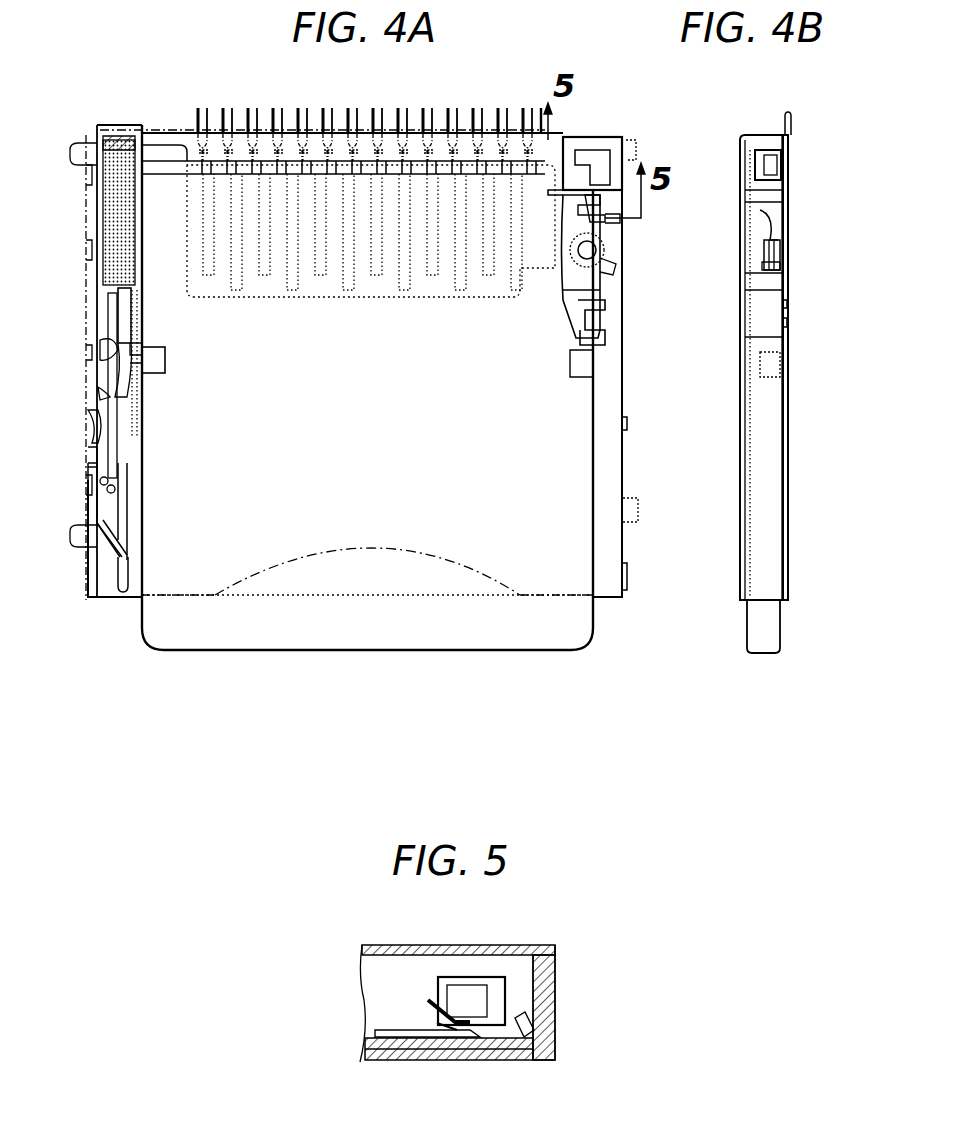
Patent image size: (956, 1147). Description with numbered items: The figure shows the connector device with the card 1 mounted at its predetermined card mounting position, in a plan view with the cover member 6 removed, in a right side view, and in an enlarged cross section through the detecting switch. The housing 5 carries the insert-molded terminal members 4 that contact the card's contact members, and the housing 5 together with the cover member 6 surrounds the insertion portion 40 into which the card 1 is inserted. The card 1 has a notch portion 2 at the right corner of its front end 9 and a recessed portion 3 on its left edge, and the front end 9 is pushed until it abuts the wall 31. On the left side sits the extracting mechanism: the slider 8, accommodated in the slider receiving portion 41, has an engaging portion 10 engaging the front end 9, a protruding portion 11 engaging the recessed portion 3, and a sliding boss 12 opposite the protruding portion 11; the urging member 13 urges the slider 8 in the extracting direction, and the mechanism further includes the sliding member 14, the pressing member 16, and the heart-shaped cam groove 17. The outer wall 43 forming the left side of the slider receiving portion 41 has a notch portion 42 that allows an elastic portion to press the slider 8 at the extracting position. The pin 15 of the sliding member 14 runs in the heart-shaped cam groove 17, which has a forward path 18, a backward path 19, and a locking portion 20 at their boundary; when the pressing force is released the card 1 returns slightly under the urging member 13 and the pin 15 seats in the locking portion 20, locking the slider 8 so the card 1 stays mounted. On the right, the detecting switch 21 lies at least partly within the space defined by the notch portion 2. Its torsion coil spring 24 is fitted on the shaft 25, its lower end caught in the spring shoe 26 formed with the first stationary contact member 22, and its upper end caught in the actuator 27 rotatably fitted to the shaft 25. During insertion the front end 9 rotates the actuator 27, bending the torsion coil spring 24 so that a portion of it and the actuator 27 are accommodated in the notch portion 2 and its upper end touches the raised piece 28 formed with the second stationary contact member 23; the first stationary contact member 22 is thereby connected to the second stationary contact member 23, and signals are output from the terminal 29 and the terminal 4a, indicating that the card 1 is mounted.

In FIG. 4A, the card 1 is at (360, 650).
In FIG. 4B, the card 1 is at (763, 645).
In FIG. 4A, the notch portion 2 is at (563, 290).
In FIG. 4A, the recessed portion 3 is at (160, 360).
In FIG. 4A, the terminal members 4 is at (197, 106).
In FIG. 4A, the terminal 4a is at (540, 120).
In FIG. 4B, the terminal 4a is at (791, 122).
In FIG. 4A, the housing 5 is at (603, 605).
In FIG. 4B, the housing 5 is at (786, 517).
In FIG. 5, the housing 5 is at (465, 1060).
In FIG. 4B, the cover member 6 is at (742, 481).
In FIG. 5, the cover member 6 is at (483, 946).
In FIG. 4A, the slider 8 is at (118, 297).
In FIG. 4A, the front end 9 is at (338, 174).
In FIG. 4A, the engaging portion 10 is at (178, 152).
In FIG. 4A, the protruding portion 11 is at (148, 350).
In FIG. 4A, the sliding boss 12 is at (100, 345).
In FIG. 4A, the urging member 13 is at (128, 135).
In FIG. 4A, the sliding member 14 is at (99, 413).
In FIG. 4A, the pin 15 is at (102, 483).
In FIG. 4A, the pressing member 16 is at (118, 343).
In FIG. 4A, the heart-shaped cam groove 17 is at (112, 580).
In FIG. 4A, the forward path 18 is at (108, 540).
In FIG. 4A, the backward path 19 is at (127, 507).
In FIG. 4A, the locking portion 20 is at (103, 510).
In FIG. 4A, the detecting switch 21 is at (596, 252).
In FIG. 5, the detecting switch 21 is at (472, 1005).
In FIG. 4A, the first stationary contact member 22 is at (605, 312).
In FIG. 4B, the first stationary contact member 22 is at (781, 250).
In FIG. 4A, the second stationary contact member 23 is at (605, 145).
In FIG. 4B, the second stationary contact member 23 is at (781, 165).
In FIG. 4A, the torsion coil spring 24 is at (605, 240).
In FIG. 4B, the torsion coil spring 24 is at (778, 265).
In FIG. 5, the torsion coil spring 24 is at (440, 1032).
In FIG. 4A, the shaft 25 is at (612, 268).
In FIG. 4A, the spring shoe 26 is at (615, 219).
In FIG. 5, the spring shoe 26 is at (534, 1026).
In FIG. 4A, the actuator 27 is at (600, 290).
In FIG. 4B, the actuator 27 is at (772, 222).
In FIG. 4A, the raised piece 28 is at (578, 190).
In FIG. 5, the raised piece 28 is at (428, 998).
In FIG. 4A, the terminal 29 is at (600, 338).
In FIG. 4B, the terminal 29 is at (788, 322).
In FIG. 4A, the wall 31 is at (252, 174).
In FIG. 4A, the insertion portion 40 is at (362, 451).
In FIG. 4A, the slider receiving portion 41 is at (90, 430).
In FIG. 4A, the notch portion 42 is at (88, 457).
In FIG. 4A, the outer wall 43 is at (98, 391).